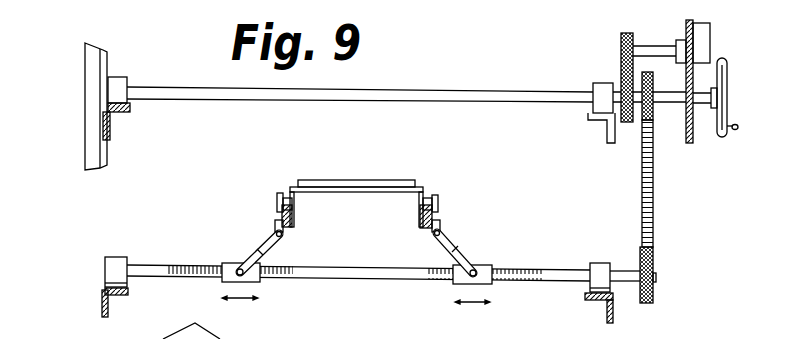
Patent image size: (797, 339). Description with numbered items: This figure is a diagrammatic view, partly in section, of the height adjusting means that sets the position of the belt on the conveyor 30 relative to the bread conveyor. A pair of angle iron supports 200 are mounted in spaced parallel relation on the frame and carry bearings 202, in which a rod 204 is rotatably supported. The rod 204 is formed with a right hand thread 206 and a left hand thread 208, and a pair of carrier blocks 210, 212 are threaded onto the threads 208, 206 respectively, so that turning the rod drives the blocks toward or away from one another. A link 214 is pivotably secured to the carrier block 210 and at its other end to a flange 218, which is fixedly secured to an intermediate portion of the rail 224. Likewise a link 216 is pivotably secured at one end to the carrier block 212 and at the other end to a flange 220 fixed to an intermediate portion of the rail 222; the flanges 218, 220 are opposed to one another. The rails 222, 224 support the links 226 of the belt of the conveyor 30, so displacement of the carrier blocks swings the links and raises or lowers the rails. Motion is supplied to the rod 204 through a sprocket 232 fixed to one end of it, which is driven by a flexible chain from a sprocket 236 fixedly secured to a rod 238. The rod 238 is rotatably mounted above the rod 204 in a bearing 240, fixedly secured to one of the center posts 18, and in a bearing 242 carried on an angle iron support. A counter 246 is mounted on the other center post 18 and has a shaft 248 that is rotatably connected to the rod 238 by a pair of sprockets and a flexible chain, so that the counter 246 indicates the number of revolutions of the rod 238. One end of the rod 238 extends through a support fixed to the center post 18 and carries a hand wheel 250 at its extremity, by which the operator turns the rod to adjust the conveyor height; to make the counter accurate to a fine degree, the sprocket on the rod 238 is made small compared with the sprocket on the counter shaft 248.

The center post 18 is at (95, 58).
The conveyor 30 is at (373, 184).
The angle iron supports 200 is at (102, 305).
The bearings 202 is at (118, 262).
The rod 204 is at (362, 273).
The right hand thread 206 is at (283, 278).
The left hand thread 208 is at (436, 279).
The carrier block 210 is at (482, 270).
The carrier block 212 is at (228, 283).
The link 214 is at (450, 243).
The link 216 is at (258, 248).
The flange 218 is at (438, 226).
The flange 220 is at (275, 225).
The rail 222 is at (292, 218).
The rail 224 is at (422, 222).
The links 226 is at (282, 202).
The sprocket 232 is at (656, 260).
The sprocket 236 is at (650, 117).
The rod 238 is at (457, 92).
The bearing 240 is at (118, 78).
The bearing 242 is at (602, 89).
The counter 246 is at (706, 50).
The shaft 248 is at (646, 50).
The hand wheel 250 is at (720, 138).